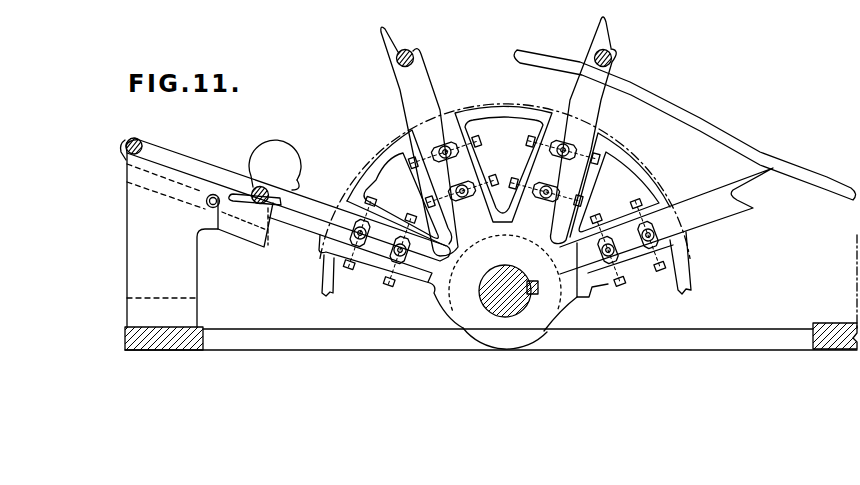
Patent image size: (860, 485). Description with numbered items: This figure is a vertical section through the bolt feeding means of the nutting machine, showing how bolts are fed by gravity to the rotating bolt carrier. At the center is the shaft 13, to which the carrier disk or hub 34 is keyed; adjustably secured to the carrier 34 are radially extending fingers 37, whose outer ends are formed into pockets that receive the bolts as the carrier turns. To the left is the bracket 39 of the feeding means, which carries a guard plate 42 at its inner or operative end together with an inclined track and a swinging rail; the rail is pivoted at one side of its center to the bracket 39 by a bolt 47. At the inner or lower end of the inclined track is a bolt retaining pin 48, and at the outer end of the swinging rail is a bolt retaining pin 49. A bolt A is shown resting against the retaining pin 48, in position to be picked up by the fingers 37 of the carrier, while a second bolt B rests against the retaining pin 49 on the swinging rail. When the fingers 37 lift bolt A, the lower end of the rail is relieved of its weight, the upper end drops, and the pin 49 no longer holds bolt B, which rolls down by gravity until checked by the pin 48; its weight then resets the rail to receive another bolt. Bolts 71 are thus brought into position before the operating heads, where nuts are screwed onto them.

The shaft 13 is at (490, 300).
The carrier disk or hub 34 is at (687, 267).
The radially extending fingers 37 is at (437, 98).
The bracket 39 is at (172, 240).
The guard plate 42 is at (293, 146).
The bolt 47 is at (213, 208).
The bolt retaining pins 48 is at (284, 198).
The bolt retaining pins 49 is at (146, 148).
The bolts 71 is at (413, 52).
The bolt A is at (257, 188).
The bolt B is at (136, 139).